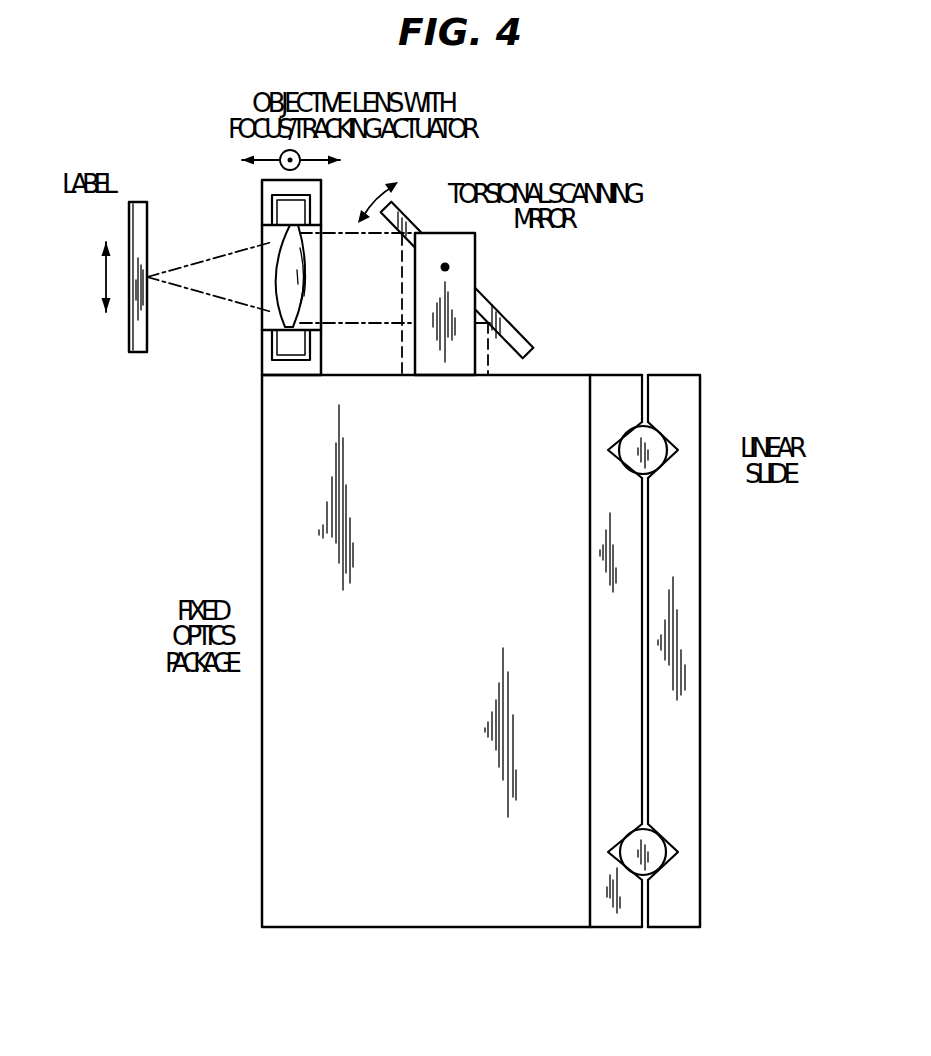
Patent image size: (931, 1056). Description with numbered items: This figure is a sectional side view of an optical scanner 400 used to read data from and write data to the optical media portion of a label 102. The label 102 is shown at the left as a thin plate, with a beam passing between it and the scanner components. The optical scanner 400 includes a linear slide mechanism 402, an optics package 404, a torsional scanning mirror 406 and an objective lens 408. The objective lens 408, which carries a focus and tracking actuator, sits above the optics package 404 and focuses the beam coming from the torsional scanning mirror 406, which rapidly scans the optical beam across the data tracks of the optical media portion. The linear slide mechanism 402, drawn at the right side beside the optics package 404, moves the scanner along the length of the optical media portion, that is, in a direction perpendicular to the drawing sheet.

The label 102 is at (133, 353).
The optical scanner 400 is at (493, 553).
The linear slide mechanism 402 is at (720, 422).
The optics package 404 is at (445, 647).
The torsional scanning mirror 406 is at (497, 313).
The objective lens 408 is at (270, 257).